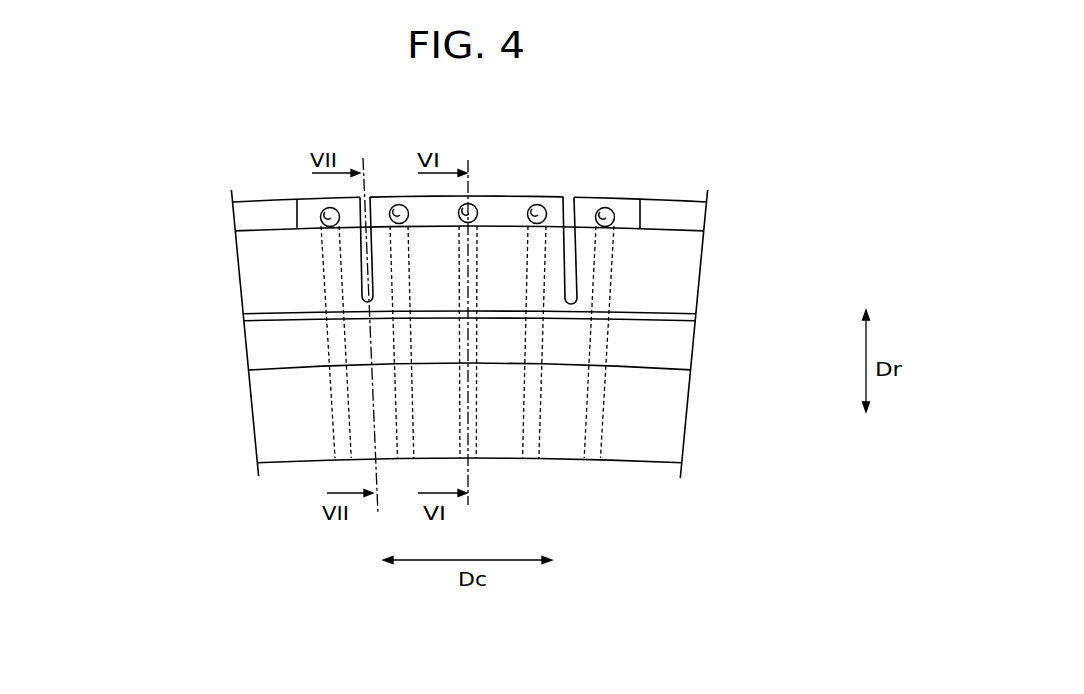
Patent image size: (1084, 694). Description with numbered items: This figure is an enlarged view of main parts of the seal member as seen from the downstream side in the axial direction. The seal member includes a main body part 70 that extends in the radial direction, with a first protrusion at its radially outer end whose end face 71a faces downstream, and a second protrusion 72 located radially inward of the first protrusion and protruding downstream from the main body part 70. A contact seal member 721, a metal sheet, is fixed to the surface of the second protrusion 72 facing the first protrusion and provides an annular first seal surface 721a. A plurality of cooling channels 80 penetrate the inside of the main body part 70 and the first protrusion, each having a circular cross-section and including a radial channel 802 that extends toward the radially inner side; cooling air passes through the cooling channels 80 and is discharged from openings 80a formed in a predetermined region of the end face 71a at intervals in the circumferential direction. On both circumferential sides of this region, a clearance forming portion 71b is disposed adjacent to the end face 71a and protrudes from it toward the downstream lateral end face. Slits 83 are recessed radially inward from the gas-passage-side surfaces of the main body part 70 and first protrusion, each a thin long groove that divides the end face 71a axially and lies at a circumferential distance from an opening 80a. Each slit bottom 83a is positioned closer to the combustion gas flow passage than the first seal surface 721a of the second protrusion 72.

The main body part 70 is at (670, 264).
The end face 71a is at (304, 210).
The clearance forming portion 71b is at (245, 226).
The second protrusion 72 is at (670, 350).
The contact seal member 721 is at (697, 322).
The first seal surface 721a is at (686, 312).
The cooling channel 80 is at (381, 393).
The radial channel 802 is at (628, 497).
The opening 80a is at (398, 204).
The slit 83 is at (360, 289).
The slit bottom 83a is at (362, 302).